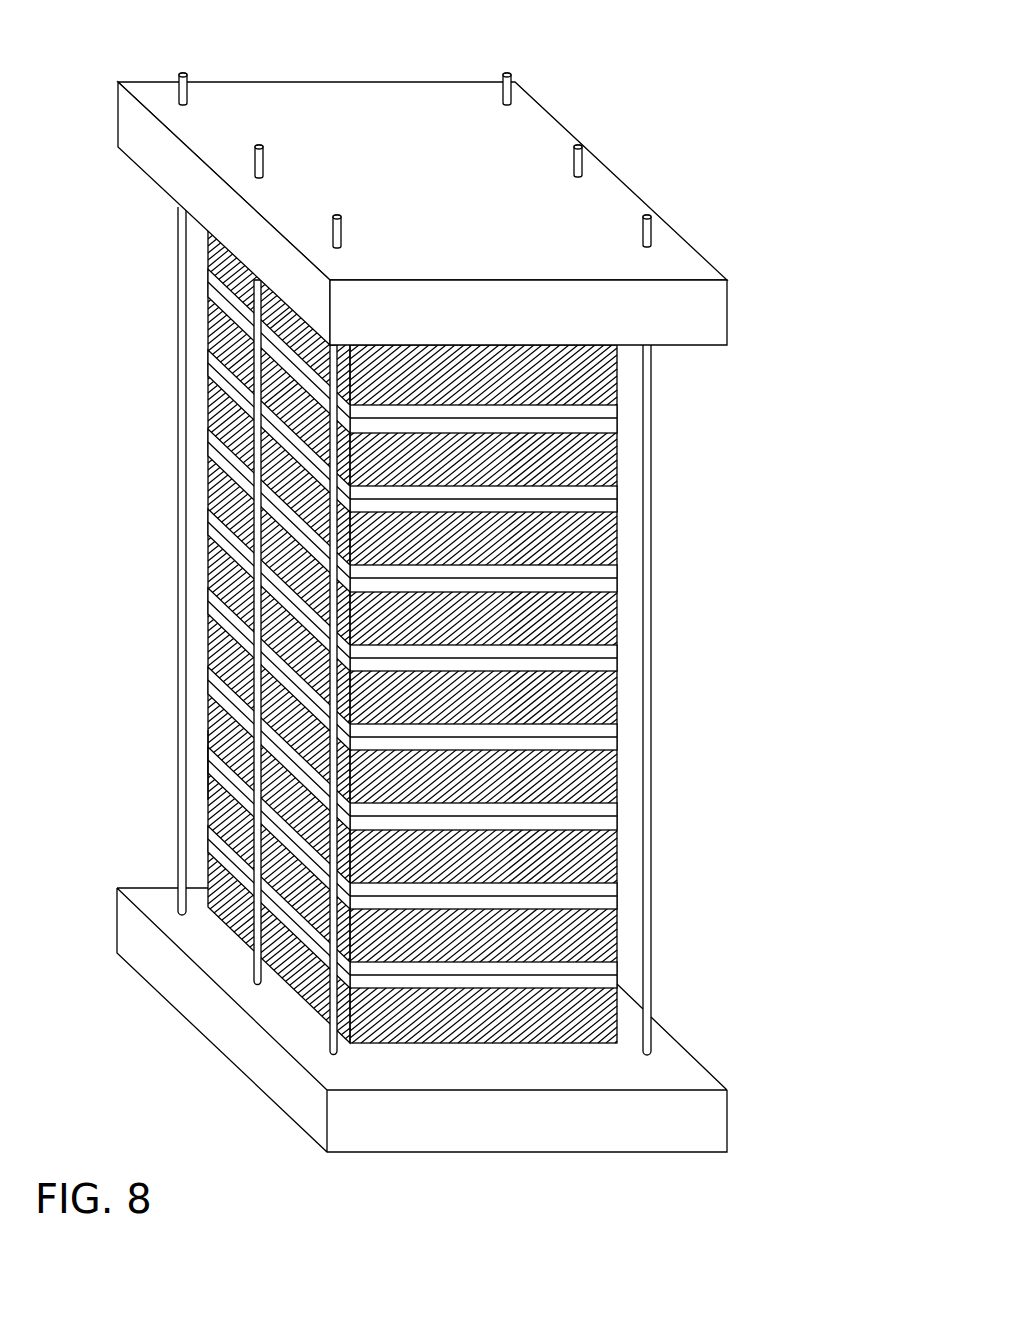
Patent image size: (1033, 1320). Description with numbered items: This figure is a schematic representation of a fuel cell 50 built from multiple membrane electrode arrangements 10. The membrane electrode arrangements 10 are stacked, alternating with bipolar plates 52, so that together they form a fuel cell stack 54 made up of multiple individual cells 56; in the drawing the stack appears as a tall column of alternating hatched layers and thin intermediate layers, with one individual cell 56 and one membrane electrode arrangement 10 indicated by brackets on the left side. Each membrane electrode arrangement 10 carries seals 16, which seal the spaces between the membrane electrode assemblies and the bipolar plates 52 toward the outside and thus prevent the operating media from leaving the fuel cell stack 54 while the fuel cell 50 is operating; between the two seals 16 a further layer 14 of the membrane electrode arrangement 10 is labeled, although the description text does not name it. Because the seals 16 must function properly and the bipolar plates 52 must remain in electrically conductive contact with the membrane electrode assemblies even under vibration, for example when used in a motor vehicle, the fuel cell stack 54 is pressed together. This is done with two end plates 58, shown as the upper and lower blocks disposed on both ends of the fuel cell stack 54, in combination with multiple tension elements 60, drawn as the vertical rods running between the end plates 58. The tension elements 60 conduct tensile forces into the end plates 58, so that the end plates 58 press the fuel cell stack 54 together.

The membrane electrode arrangement 10 is at (346, 628).
The heat transfer plate 14 is at (220, 613).
The seal 16 is at (213, 598).
The fuel cell 50 is at (700, 90).
The bipolar plate 52 is at (223, 578).
The fuel cell stack 54 is at (750, 630).
The individual cell 56 is at (207, 730).
The end plate 58 is at (617, 207).
The tension element 60 is at (183, 383).